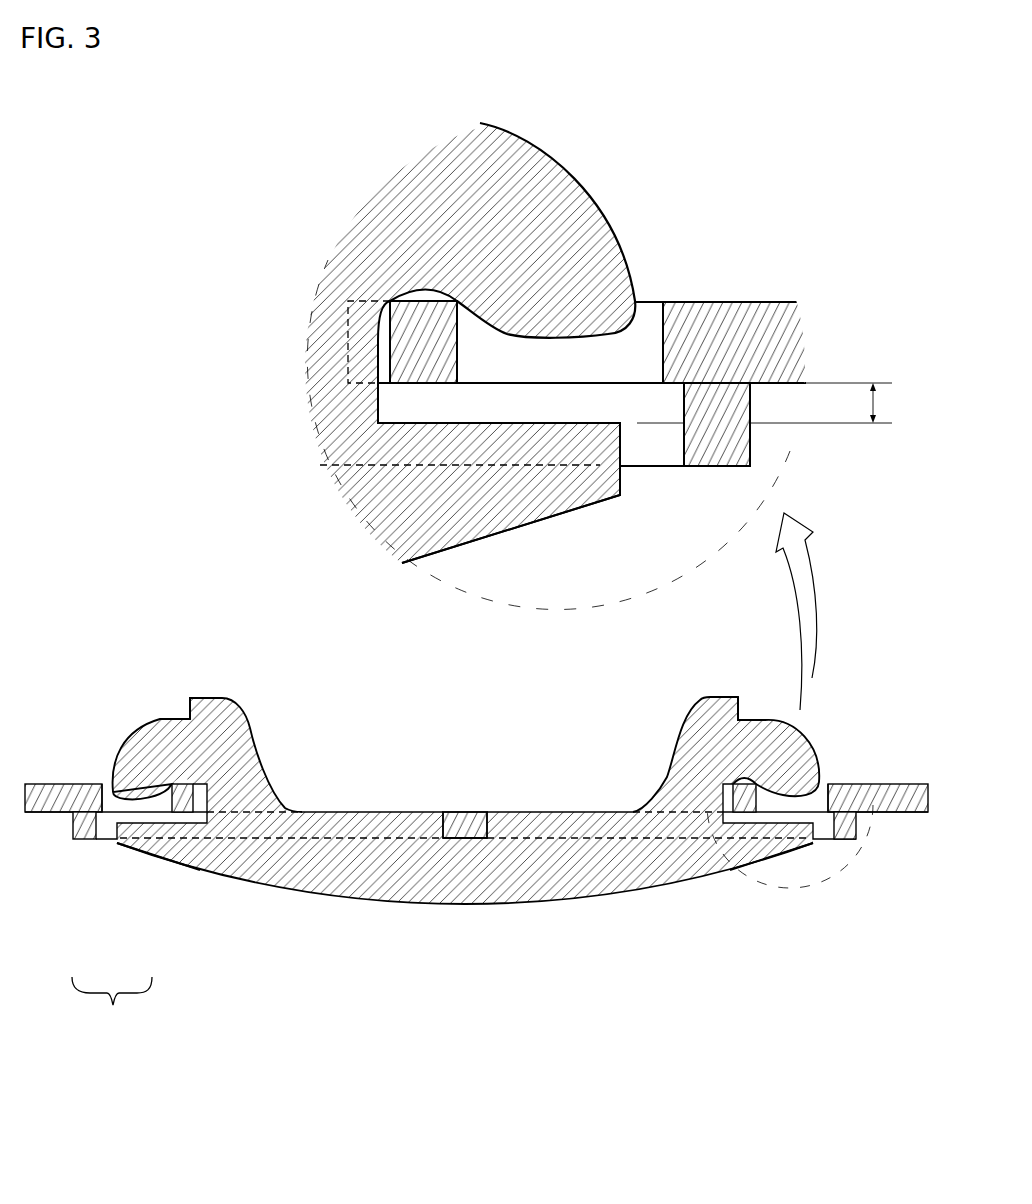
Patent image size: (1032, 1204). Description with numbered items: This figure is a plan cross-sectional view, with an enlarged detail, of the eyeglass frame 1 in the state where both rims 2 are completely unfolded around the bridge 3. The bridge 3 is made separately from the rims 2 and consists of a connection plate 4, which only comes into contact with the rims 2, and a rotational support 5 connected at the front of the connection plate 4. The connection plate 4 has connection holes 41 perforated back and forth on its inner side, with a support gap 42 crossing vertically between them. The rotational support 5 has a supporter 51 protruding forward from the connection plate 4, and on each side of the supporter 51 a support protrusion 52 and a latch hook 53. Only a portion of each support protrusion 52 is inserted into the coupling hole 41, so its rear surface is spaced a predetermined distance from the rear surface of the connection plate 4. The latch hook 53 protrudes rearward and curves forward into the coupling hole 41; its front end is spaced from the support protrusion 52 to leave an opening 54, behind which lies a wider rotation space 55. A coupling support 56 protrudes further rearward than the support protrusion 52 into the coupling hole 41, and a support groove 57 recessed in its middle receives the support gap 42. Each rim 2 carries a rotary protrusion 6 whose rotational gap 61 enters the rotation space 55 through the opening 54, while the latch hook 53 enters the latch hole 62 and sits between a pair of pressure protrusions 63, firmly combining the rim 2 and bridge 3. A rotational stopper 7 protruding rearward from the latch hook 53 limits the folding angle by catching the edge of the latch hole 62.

The eyeglass frame 1 is at (590, 922).
The rim 2 is at (790, 322).
The bridge 3 is at (104, 1035).
The connection plate 4 is at (752, 440).
The rotational support 5 is at (210, 882).
The rotary protrusion 6 is at (725, 293).
The rotational stopper 7 is at (208, 698).
The connection hole 41 is at (682, 442).
The support gap 42 is at (452, 820).
The supporter 51 is at (452, 897).
The support protrusion 52 is at (530, 517).
The latch hook 53 is at (538, 140).
The opening 54 is at (580, 342).
The rotation space 55 is at (397, 292).
The coupling support 56 is at (372, 826).
The support groove 57 is at (478, 822).
The rotational gap 61 is at (422, 372).
The latch hole 62 is at (660, 322).
The pressure protrusion 63 is at (345, 300).